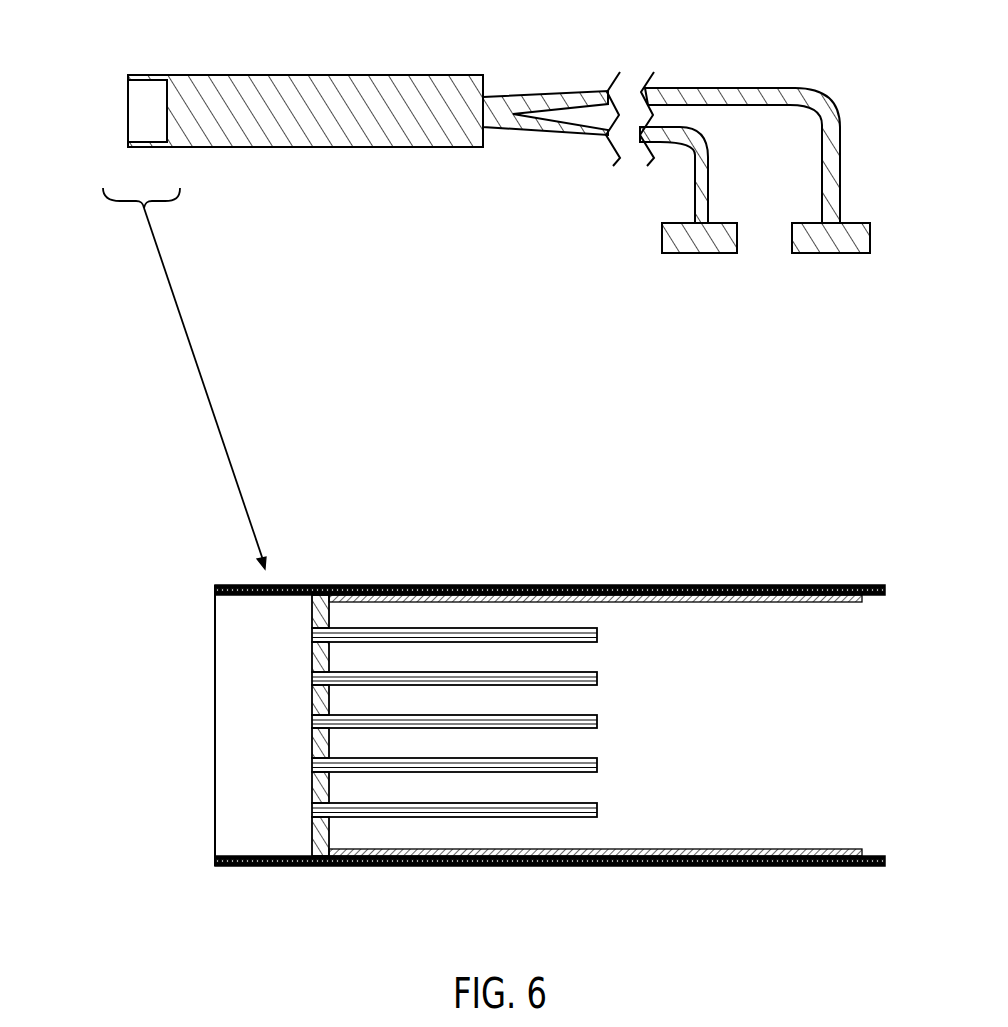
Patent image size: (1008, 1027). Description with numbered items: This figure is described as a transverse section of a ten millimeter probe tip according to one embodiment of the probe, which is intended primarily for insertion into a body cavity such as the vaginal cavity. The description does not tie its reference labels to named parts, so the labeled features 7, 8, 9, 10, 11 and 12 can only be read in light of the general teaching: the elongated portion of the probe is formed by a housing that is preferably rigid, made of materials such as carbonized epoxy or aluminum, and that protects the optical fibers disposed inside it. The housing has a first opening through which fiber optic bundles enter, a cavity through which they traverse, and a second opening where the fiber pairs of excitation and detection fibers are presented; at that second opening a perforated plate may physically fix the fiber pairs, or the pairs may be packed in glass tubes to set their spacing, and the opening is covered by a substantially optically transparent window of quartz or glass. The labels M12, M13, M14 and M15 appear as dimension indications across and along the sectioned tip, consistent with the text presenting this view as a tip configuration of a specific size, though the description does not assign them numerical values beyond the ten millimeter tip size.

The connector 7 is at (391, 562).
The upper shield plate 8 is at (663, 595).
The contact pins 9 is at (597, 722).
The lower shield plate 10 is at (710, 849).
The housing cavity 11 is at (243, 808).
The insulating contact carrier wall 12 is at (312, 843).
The connector height dimension M12 is at (109, 591).
The contact head height dimension M13 is at (107, 142).
The contact head length dimension M14 is at (477, 168).
The contact leg length dimension M15 is at (829, 53).